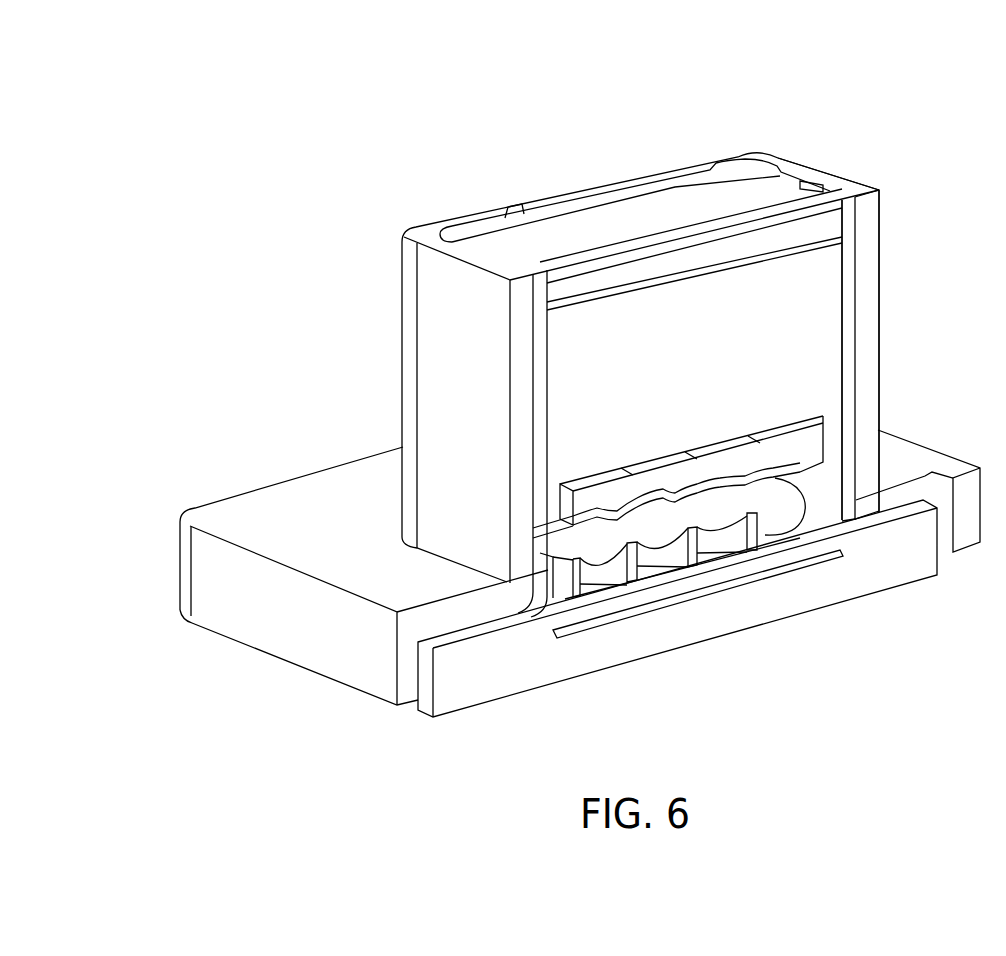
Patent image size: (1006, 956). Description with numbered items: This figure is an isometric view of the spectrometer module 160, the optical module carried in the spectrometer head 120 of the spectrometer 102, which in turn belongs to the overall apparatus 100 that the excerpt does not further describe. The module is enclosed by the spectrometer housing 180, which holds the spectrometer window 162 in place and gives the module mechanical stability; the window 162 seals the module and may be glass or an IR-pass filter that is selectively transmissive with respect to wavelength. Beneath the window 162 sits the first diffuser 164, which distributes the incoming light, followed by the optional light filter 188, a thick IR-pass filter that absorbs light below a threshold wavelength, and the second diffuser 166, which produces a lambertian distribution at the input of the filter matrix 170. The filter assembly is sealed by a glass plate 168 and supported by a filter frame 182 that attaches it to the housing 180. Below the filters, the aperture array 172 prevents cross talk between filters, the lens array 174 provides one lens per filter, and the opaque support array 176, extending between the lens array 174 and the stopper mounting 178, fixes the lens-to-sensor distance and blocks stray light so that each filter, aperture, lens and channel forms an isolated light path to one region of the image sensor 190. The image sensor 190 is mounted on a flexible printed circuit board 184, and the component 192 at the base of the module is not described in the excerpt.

The electronic device 100 is at (258, 125).
The spectrometer 102 is at (365, 110).
The spectrometer head 120 is at (495, 76).
The spectrometer module 160 is at (681, 292).
The spectrometer window 162 is at (860, 200).
The first diffuser 164 is at (567, 297).
The second diffuser 166 is at (557, 463).
The glass plate 168 is at (587, 477).
The filter matrix 170 is at (600, 510).
The aperture array 172 is at (780, 482).
The lens array 174 is at (552, 553).
The support array 176 is at (760, 552).
The stopper mounting 178 is at (702, 590).
The spectrometer housing 180 is at (862, 238).
The filter frame 182 is at (805, 440).
The flexible printed circuit board 184 is at (752, 603).
The light filter 188 is at (822, 288).
The image sensor 190 is at (650, 608).
The base 192 is at (295, 502).